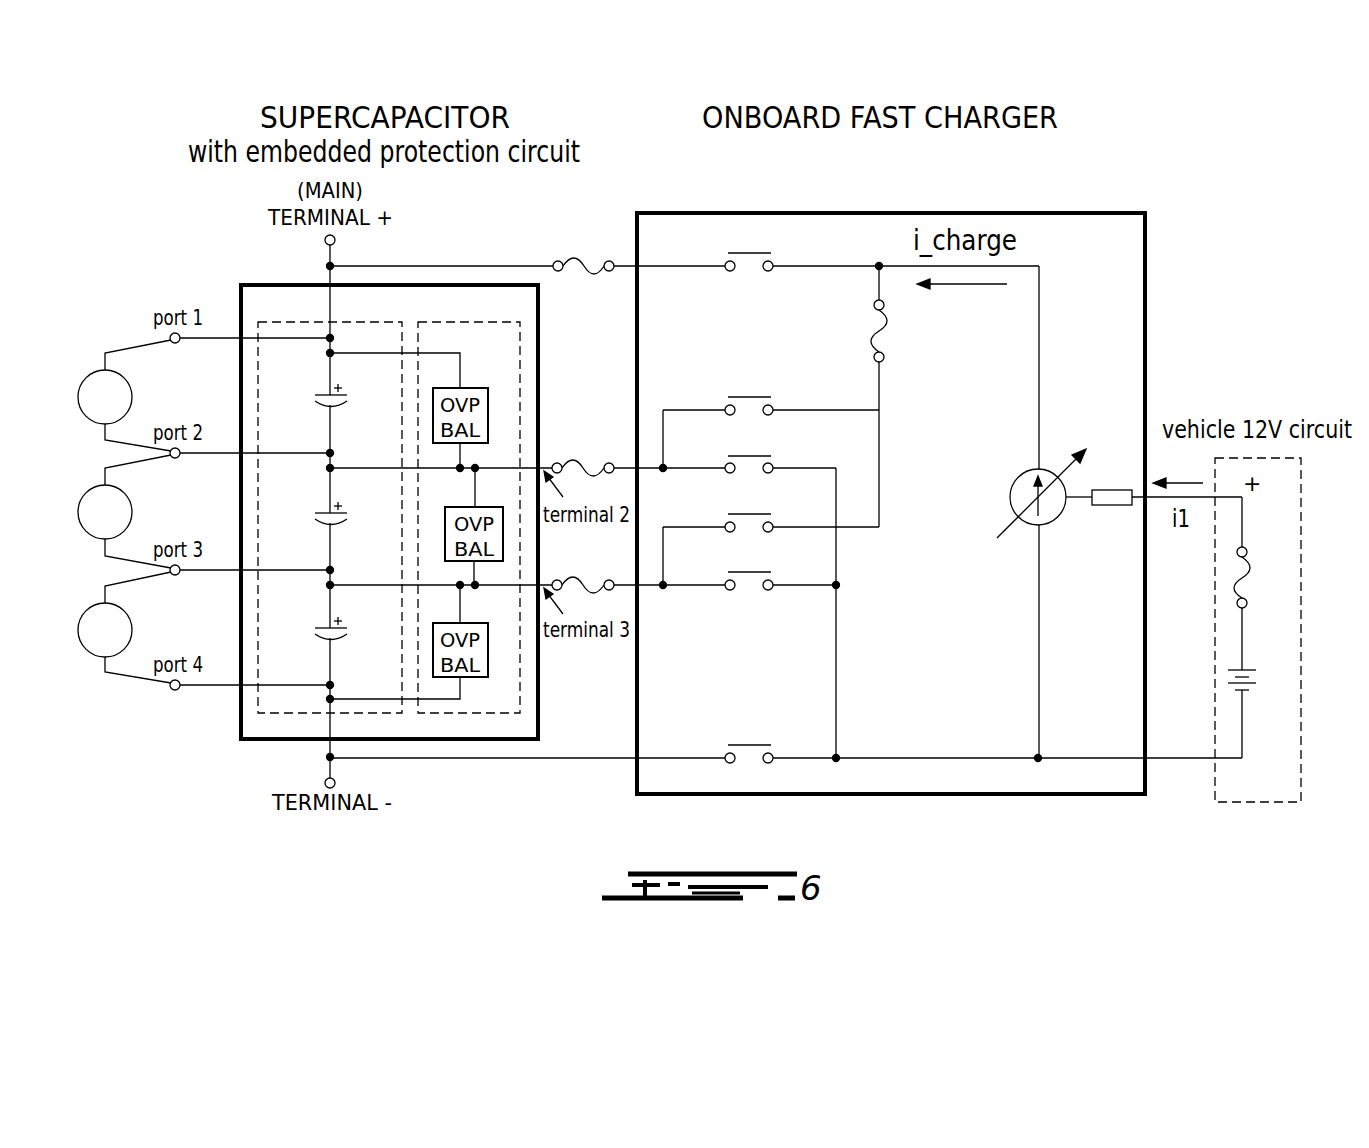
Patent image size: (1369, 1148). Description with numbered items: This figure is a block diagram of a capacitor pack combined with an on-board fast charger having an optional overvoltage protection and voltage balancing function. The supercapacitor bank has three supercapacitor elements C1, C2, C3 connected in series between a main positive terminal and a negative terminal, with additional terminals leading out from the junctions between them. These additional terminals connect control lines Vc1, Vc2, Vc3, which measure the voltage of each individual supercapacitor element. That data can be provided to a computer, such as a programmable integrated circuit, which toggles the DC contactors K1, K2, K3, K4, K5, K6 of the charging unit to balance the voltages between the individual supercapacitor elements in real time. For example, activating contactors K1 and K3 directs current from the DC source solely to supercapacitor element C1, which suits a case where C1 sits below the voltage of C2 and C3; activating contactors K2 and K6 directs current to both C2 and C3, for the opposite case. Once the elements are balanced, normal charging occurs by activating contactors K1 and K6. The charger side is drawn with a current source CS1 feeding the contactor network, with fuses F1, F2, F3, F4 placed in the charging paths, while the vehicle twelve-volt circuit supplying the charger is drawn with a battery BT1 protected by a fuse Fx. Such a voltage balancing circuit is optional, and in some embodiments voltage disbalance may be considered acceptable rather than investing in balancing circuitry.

The control line Vc1 is at (124, 395).
The control line Vc2 is at (124, 511).
The control line Vc3 is at (124, 627).
The supercapacitor element C1 is at (346, 399).
The supercapacitor element C2 is at (346, 517).
The supercapacitor element C3 is at (346, 632).
The fuse 1 F1 is at (583, 250).
The fuse 2 F2 is at (894, 331).
The fuse 3 F3 is at (583, 452).
The fuse 4 F4 is at (583, 569).
The vehicle circuit fuse Fx is at (1259, 577).
The DC contactor K1 is at (749, 247).
The DC contactor K2 is at (749, 391).
The DC contactor K3 is at (749, 450).
The DC contactor K4 is at (749, 508).
The DC contactor K5 is at (749, 566).
The DC contactor K6 is at (749, 738).
The controlled current source CS1 is at (1052, 493).
The vehicle 12V battery BT1 is at (1260, 682).